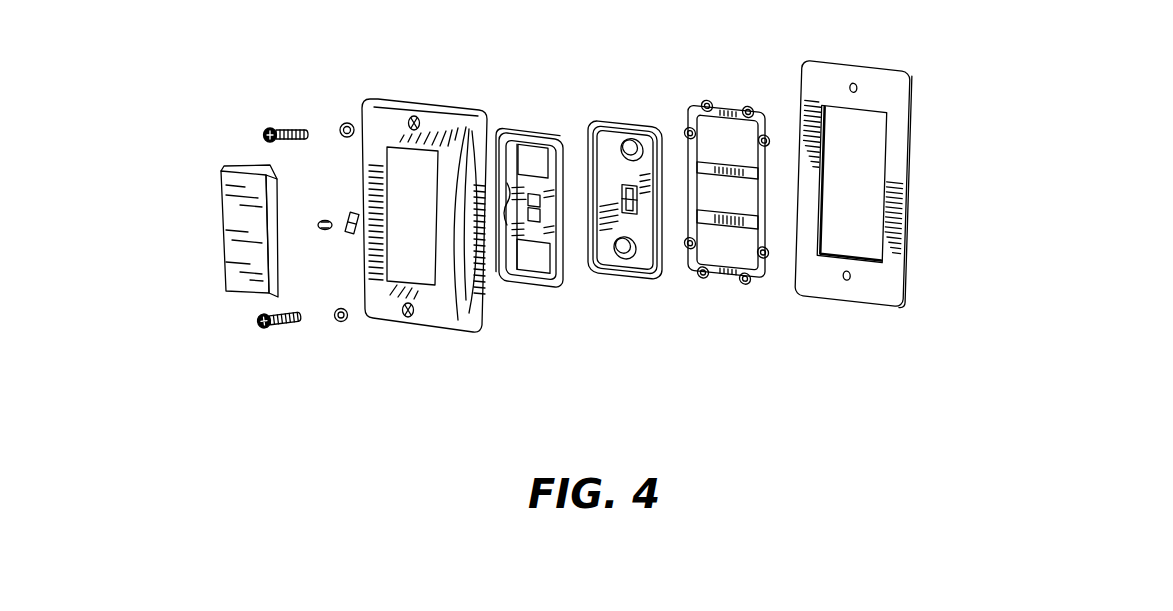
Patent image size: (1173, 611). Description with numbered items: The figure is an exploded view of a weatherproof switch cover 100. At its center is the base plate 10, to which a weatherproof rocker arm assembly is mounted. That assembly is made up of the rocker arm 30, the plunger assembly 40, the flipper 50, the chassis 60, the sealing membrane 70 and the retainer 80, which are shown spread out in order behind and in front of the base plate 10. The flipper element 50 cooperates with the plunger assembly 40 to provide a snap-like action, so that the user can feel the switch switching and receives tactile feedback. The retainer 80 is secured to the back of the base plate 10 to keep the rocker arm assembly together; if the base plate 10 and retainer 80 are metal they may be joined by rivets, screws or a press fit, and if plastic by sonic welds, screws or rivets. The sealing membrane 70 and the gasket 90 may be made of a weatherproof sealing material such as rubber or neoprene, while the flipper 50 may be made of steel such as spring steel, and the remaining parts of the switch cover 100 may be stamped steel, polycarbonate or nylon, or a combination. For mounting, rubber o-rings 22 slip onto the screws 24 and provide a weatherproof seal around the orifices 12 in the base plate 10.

The switch cover 100 is at (743, 370).
The base plate 10 is at (400, 100).
The orifices 12 is at (420, 120).
The rubber o-rings 22 is at (345, 122).
The screws 24 is at (278, 128).
The rocker arm 30 is at (235, 165).
The plunger assembly 40 is at (327, 230).
The flipper 50 is at (352, 234).
The chassis 60 is at (528, 130).
The sealing membrane 70 is at (622, 114).
The retainer 80 is at (723, 106).
The gasket 90 is at (850, 60).